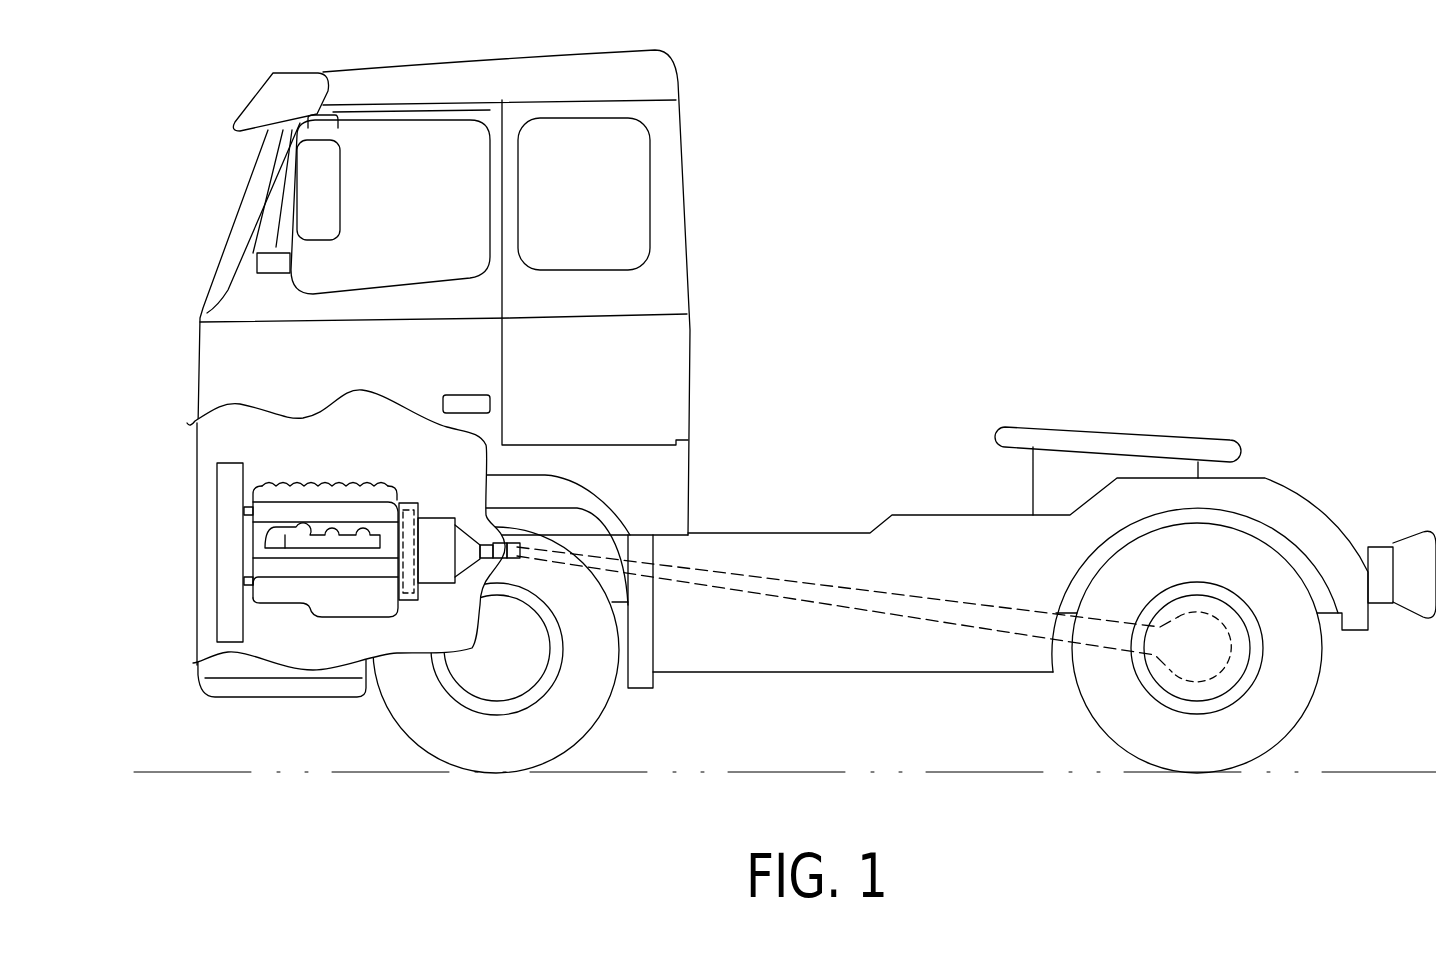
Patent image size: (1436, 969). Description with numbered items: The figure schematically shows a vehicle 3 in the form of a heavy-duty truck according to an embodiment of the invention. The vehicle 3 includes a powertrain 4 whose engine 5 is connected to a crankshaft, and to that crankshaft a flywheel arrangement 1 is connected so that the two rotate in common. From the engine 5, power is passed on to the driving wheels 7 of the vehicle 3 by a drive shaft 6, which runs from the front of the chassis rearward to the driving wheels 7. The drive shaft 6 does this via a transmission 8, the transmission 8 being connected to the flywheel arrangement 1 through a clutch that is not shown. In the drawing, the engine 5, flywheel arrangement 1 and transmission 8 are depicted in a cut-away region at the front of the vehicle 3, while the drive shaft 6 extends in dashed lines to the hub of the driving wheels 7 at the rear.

The flywheel arrangement 1 is at (407, 593).
The vehicle 3 is at (816, 446).
The powertrain 4 is at (322, 632).
The engine 5 is at (330, 542).
The drive shaft 6 is at (777, 583).
The driving wheels 7 is at (1200, 742).
The transmission 8 is at (440, 553).